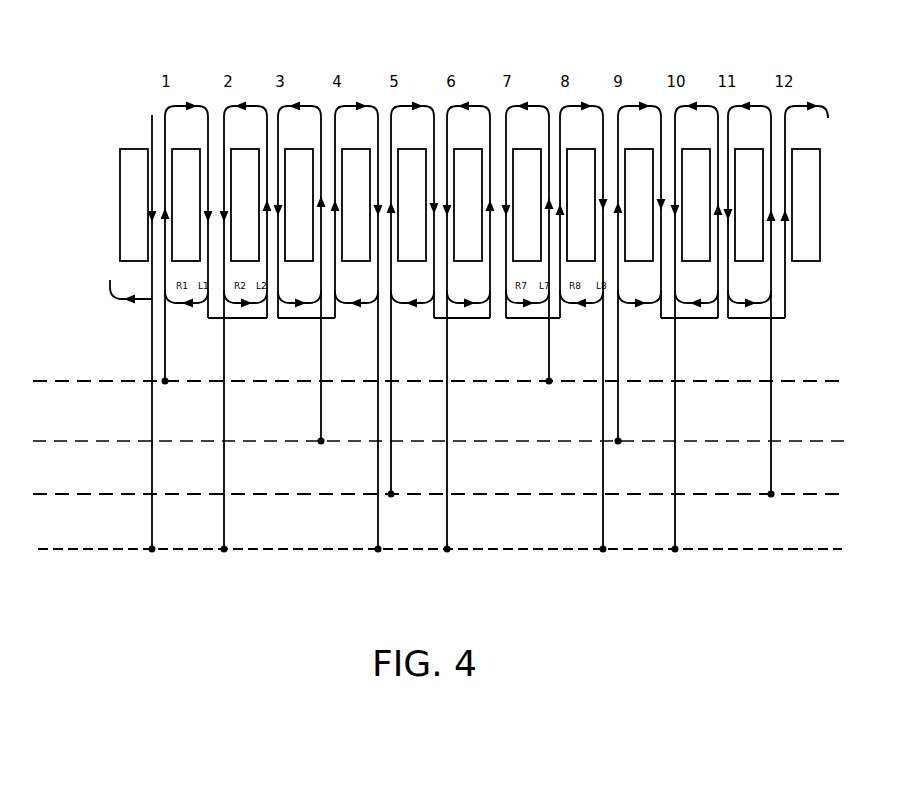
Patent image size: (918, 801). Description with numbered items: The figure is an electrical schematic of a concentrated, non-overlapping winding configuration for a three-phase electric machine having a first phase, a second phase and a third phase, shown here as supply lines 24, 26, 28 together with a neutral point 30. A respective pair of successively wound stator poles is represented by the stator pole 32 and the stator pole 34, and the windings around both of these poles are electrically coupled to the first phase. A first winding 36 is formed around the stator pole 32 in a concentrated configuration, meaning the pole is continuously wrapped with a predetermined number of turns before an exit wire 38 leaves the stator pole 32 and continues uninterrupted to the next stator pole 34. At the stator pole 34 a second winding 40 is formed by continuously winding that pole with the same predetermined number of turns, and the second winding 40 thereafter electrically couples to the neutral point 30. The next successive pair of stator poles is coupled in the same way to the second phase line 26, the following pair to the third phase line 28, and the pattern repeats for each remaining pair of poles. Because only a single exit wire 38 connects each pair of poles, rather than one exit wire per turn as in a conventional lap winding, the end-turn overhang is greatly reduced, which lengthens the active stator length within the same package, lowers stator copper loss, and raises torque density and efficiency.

The phase A supply line 24 is at (95, 378).
The phase B supply line 26 is at (97, 439).
The phase C supply line 28 is at (97, 493).
The neutral point 30 is at (110, 550).
The stator pole 32 is at (180, 157).
The stator pole 34 is at (240, 158).
The first winding 36 is at (165, 108).
The exit wire 38 is at (238, 320).
The second winding 40 is at (305, 107).